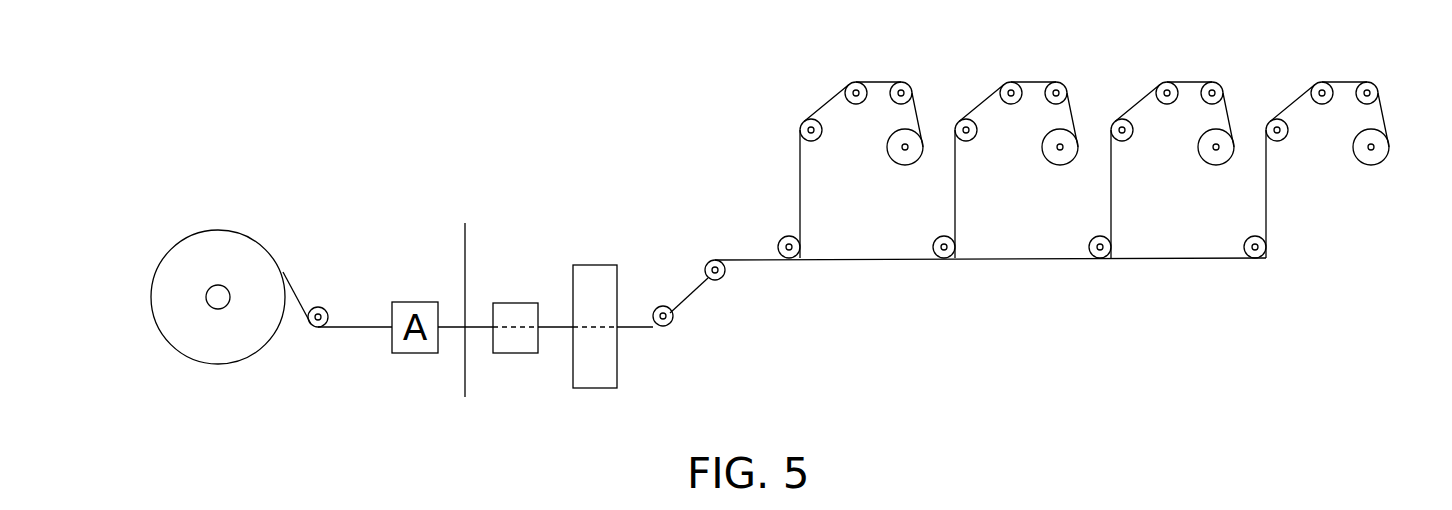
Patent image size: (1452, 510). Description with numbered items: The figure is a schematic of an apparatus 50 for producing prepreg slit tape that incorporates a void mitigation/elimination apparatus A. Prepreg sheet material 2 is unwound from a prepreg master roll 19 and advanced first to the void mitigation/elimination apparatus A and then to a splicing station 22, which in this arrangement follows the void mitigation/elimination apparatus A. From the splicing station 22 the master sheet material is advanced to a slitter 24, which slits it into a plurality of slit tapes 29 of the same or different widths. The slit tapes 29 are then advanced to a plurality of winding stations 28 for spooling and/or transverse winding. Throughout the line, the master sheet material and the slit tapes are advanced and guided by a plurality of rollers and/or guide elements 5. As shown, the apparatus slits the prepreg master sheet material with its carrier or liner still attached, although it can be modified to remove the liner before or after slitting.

The prepreg master roll 19 is at (223, 252).
The prepreg sheet material 2 is at (297, 290).
The rollers and/or guide elements 5 is at (318, 328).
The splicing station 22 is at (510, 303).
The slitter 24 is at (593, 272).
The winding stations 28 is at (877, 82).
The slit tapes 29 is at (685, 287).
The apparatus 50 is at (628, 126).